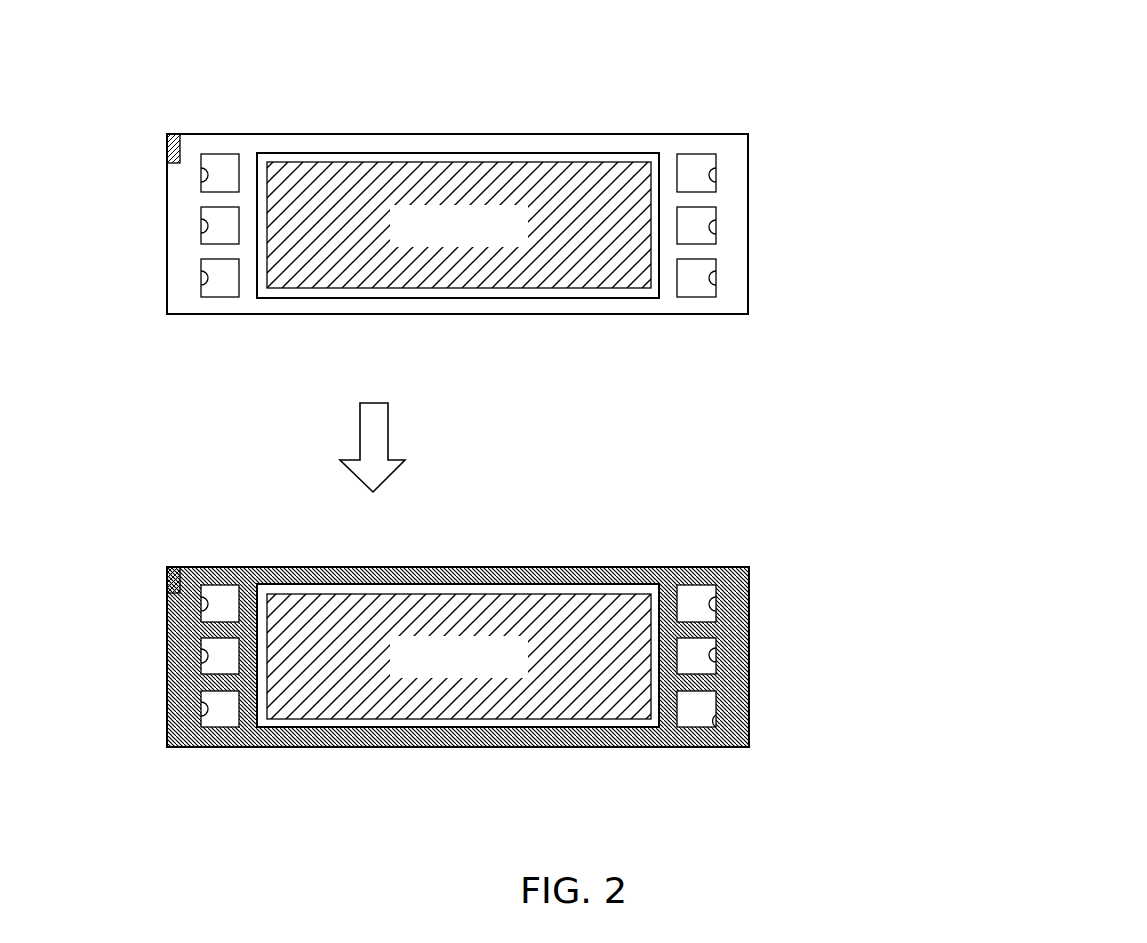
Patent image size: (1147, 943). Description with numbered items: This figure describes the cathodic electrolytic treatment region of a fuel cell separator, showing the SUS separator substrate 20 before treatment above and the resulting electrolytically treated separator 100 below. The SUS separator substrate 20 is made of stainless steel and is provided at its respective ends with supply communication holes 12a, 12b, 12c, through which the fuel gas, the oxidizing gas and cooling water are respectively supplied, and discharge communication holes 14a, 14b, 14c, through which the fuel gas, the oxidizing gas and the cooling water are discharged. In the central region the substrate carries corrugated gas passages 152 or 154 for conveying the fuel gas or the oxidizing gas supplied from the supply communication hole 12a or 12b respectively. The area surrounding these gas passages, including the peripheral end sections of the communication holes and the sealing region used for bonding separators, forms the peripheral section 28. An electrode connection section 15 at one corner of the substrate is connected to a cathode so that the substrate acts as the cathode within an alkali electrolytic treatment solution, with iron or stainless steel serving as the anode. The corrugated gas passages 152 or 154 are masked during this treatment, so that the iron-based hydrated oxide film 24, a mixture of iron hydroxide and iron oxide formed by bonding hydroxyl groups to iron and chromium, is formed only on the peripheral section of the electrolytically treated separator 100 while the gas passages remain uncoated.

The SUS separator substrate 20 is at (628, 177).
The electrolytically treated separator 100 is at (644, 656).
The peripheral section 28 is at (733, 250).
The iron-based hydrated oxide film 24 is at (503, 738).
The corrugated gas passage 152 is at (438, 182).
The corrugated gas passage 154 is at (459, 381).
The electrode connection section 15 is at (163, 147).
The discharge communication hole 14a is at (201, 272).
The discharge communication hole 14b is at (201, 168).
The discharge communication hole 14c is at (201, 220).
The supply communication hole 12a is at (716, 168).
The supply communication hole 12b is at (716, 220).
The supply communication hole 12c is at (716, 275).